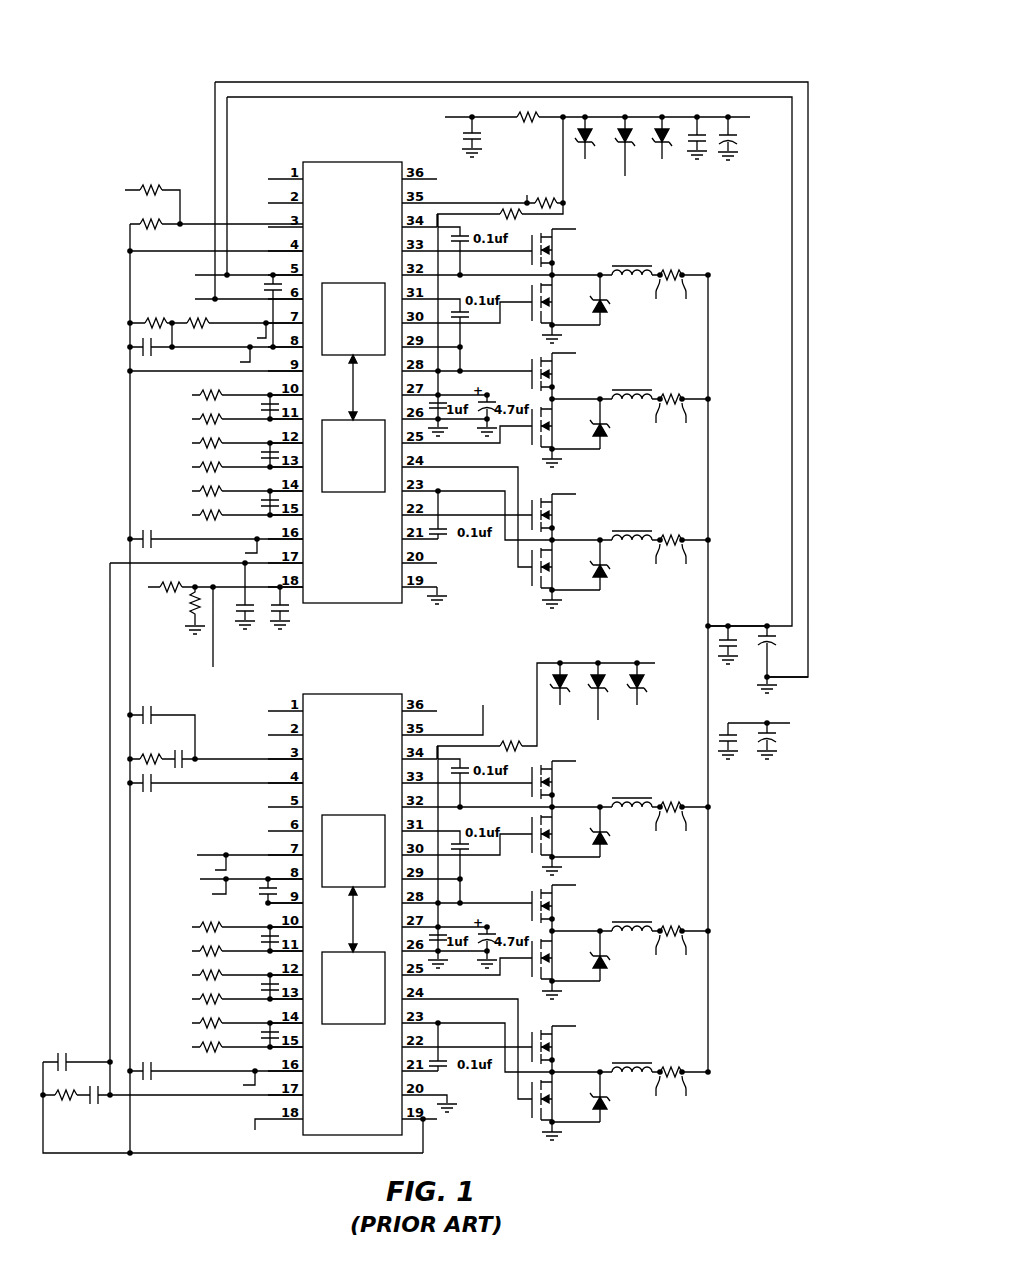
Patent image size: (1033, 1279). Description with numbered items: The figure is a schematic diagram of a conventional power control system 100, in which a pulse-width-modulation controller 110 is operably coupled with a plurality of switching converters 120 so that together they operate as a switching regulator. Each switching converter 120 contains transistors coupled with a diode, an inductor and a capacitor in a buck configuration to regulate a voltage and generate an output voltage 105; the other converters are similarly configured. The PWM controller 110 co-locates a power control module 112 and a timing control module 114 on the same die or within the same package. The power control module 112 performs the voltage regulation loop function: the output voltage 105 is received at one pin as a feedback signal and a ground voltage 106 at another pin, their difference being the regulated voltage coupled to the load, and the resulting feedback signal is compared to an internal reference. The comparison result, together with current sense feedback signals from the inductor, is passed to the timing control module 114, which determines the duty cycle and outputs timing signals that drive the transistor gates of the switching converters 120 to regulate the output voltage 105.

The power control system 100 is at (642, 55).
The pulse-width-modulation (PWM) controller 110 is at (348, 162).
The power control module 112 is at (350, 282).
The timing control module 114 is at (352, 494).
The switching converter 120 is at (621, 678).
The output voltage 105 is at (743, 622).
The ground voltage 106 is at (808, 637).